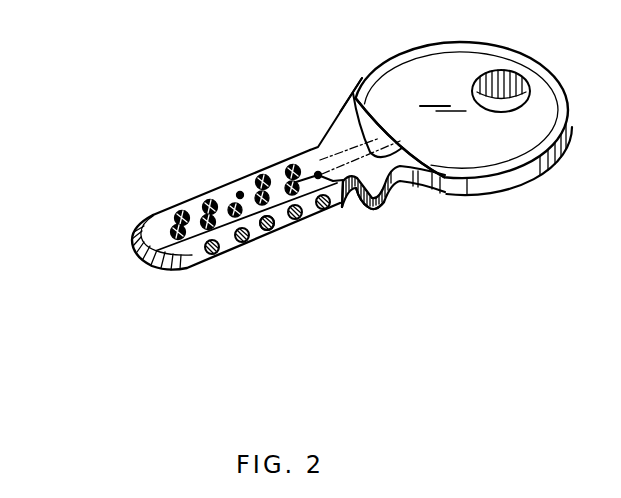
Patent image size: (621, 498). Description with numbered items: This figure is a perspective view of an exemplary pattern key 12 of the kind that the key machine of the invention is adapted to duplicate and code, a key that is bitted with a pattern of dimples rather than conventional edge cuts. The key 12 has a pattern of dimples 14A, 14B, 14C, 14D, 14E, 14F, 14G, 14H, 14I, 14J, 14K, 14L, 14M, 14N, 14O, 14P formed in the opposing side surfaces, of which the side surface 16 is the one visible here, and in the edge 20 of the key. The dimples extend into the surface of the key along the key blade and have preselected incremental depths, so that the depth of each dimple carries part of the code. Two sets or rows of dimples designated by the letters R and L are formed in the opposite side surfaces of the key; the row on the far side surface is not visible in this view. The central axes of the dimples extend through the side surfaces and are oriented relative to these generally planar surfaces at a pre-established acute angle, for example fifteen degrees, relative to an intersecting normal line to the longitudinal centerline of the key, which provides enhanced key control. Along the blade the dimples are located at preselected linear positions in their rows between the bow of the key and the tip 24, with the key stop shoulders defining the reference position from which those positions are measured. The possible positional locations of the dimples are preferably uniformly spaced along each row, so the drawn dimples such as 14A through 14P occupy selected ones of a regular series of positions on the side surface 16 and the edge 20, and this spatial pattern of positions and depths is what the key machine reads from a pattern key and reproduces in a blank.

The key 12 is at (172, 97).
The side surface 16 is at (150, 216).
The edge 20 is at (173, 270).
The tip 24 is at (136, 248).
The dimple 14A is at (323, 210).
The dimple 14B is at (298, 222).
The dimple 14C is at (281, 234).
The dimple 14D is at (250, 243).
The dimple 14E is at (232, 258).
The dimple 14F is at (181, 211).
The dimple 14G is at (176, 226).
The dimple 14H is at (206, 201).
The dimple 14I is at (205, 216).
The dimple 14J is at (266, 228).
The dimple 14K is at (242, 189).
The dimple 14L is at (260, 178).
The dimple 14M is at (308, 150).
The dimple 14N is at (336, 208).
The dimple 14O is at (356, 88).
The dimple 14P is at (365, 209).
The row of dimples R is at (368, 108).
The row of dimples L is at (402, 148).